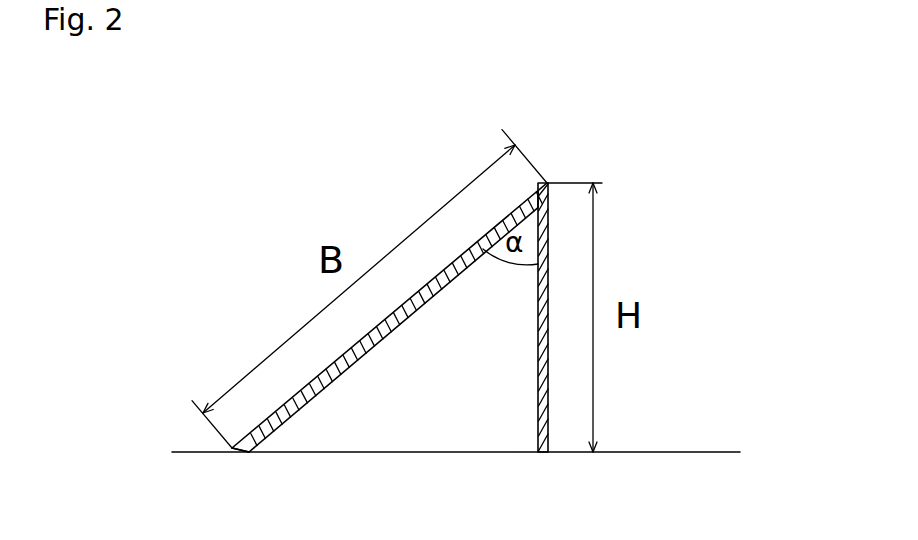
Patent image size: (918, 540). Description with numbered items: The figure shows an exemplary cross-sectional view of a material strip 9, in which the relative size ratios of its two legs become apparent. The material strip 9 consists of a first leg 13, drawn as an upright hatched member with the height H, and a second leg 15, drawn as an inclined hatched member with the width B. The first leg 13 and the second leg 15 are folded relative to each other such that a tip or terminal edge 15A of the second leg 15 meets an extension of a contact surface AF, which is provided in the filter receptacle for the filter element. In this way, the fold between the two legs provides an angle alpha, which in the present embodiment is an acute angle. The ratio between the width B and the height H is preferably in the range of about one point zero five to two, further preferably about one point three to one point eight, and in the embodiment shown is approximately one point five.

The material strip 9 is at (242, 237).
The first leg 13 is at (536, 399).
The second leg 15 is at (338, 374).
The terminal edge 15A is at (243, 454).
The contact surface AF is at (702, 452).